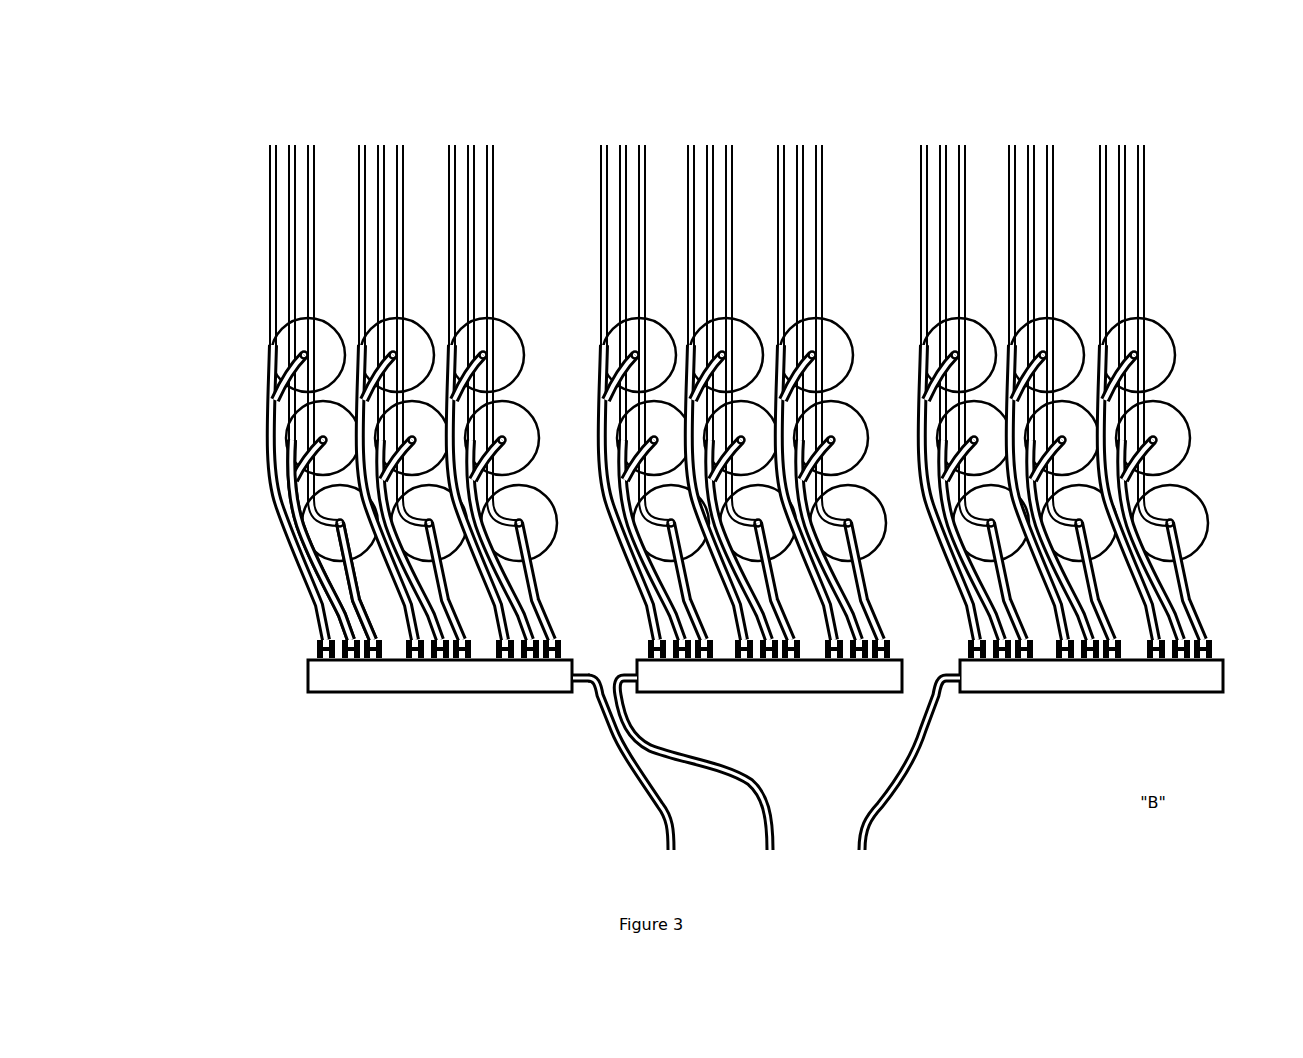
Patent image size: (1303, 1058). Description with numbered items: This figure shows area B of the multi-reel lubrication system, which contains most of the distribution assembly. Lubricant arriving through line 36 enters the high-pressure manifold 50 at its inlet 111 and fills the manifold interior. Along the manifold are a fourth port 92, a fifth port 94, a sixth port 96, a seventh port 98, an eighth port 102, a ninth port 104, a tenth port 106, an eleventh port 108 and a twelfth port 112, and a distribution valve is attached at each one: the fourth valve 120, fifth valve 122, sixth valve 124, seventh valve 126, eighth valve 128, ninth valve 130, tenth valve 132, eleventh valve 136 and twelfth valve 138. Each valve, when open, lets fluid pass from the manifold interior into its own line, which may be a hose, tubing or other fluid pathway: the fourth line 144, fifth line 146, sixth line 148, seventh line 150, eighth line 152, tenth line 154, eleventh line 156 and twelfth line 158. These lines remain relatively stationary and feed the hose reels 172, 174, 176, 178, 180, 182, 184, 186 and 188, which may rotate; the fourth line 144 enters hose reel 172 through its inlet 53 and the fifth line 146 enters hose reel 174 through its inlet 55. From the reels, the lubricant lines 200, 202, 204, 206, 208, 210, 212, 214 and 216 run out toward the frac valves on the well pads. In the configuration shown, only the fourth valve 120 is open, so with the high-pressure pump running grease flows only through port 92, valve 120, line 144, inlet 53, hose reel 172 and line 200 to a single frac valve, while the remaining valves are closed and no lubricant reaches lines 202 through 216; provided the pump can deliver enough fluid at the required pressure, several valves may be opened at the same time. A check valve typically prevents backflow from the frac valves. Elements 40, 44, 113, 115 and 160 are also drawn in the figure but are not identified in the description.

The line 36 is at (628, 770).
The cable 40 is at (728, 770).
The cable 44 is at (925, 745).
The high-pressure manifold 50 is at (308, 678).
The inlet 53 is at (283, 345).
The inlet 55 is at (284, 368).
The fourth port 92 is at (322, 659).
The fifth port 94 is at (347, 659).
The sixth port 96 is at (369, 659).
The seventh port 98 is at (411, 659).
The eighth port 102 is at (436, 659).
The ninth port 104 is at (458, 659).
The tenth port 106 is at (501, 659).
The eleventh port 108 is at (526, 659).
The inlet 111 is at (578, 676).
The twelfth port 112 is at (556, 660).
The connector 113 is at (640, 680).
The connector 115 is at (962, 675).
The fourth valve 120 is at (316, 650).
The fifth valve 122 is at (330, 659).
The sixth valve 124 is at (355, 659).
The seventh valve 126 is at (377, 659).
The eighth valve 128 is at (419, 659).
The ninth valve 130 is at (444, 659).
The tenth valve 132 is at (466, 659).
The eleventh valve 136 is at (509, 659).
The twelfth valve 138 is at (574, 678).
The fourth line 144 is at (270, 437).
The fifth line 146 is at (292, 467).
The sixth line 148 is at (356, 540).
The seventh line 150 is at (356, 471).
The eighth line 152 is at (356, 503).
The tenth line 154 is at (350, 566).
The eleventh line 156 is at (535, 562).
The twelfth line 158 is at (520, 588).
The tube segment 160 is at (548, 612).
The hose reel 172 is at (320, 335).
The hose reel 174 is at (407, 335).
The hose reel 176 is at (347, 418).
The hose reel 178 is at (352, 508).
The hose reel 180 is at (433, 433).
The hose reel 182 is at (513, 362).
The hose reel 184 is at (443, 512).
The hose reel 186 is at (527, 447).
The hose reel 188 is at (540, 527).
The line 200 is at (275, 143).
The line 202 is at (294, 143).
The line 204 is at (312, 143).
The line 206 is at (361, 143).
The line 208 is at (381, 143).
The line 210 is at (400, 143).
The line 212 is at (452, 143).
The line 214 is at (473, 143).
The line 216 is at (493, 143).